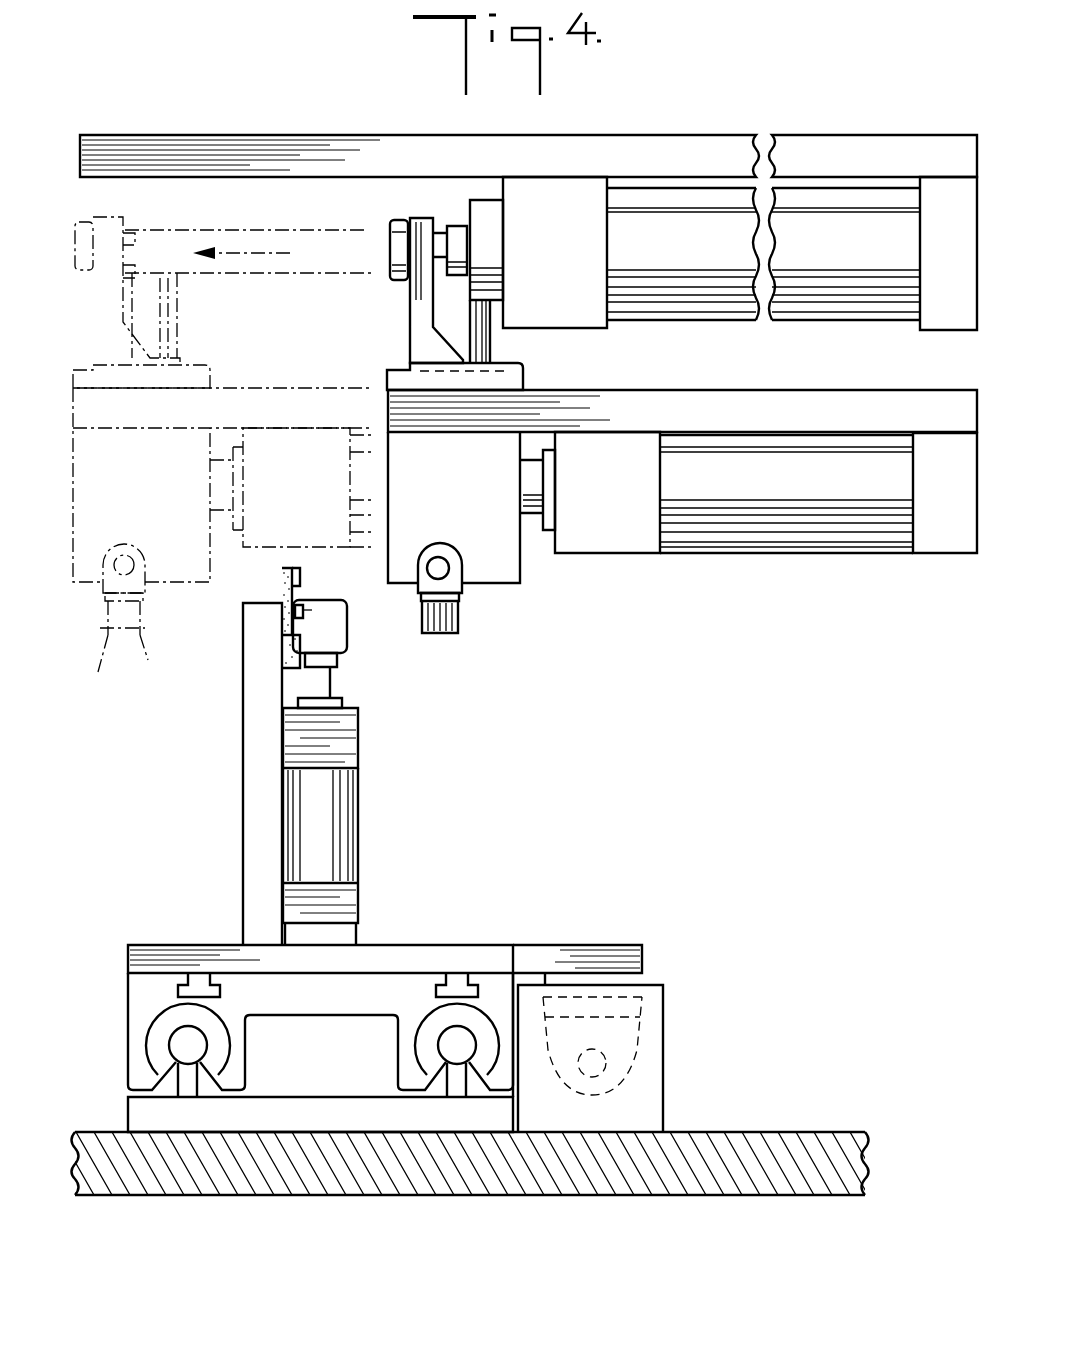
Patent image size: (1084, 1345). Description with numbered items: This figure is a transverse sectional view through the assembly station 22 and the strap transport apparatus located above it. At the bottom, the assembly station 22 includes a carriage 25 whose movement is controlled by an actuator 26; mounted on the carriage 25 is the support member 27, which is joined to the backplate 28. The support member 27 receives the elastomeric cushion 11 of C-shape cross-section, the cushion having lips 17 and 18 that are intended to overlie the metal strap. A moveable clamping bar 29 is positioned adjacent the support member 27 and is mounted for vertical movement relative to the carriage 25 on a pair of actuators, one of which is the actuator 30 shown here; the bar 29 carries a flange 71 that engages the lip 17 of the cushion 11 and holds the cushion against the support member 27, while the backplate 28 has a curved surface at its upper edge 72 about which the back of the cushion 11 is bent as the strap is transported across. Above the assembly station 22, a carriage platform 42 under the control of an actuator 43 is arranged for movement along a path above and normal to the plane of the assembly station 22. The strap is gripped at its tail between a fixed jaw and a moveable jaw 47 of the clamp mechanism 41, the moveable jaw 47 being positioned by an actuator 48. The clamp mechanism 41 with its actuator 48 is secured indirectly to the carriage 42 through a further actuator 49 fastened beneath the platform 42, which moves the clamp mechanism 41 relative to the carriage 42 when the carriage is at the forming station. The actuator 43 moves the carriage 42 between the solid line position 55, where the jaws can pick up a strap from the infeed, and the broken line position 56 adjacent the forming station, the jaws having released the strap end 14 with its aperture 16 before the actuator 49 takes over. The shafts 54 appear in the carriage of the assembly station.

The elastomeric cushion 11 is at (134, 640).
The strap end 14 is at (452, 556).
The aperture 16 is at (449, 572).
The cushion lip 17 is at (305, 607).
The cushion lip 18 is at (297, 578).
The assembly station 22 is at (363, 750).
The carriage 25 is at (485, 945).
The actuator 26 is at (655, 1052).
The support member 27 is at (290, 648).
The backplate 28 is at (258, 712).
The moveable clamping bar 29 is at (338, 600).
The actuator 30 is at (333, 851).
The clamp mechanism 41 is at (477, 607).
The carriage platform 42 is at (330, 362).
The actuator 43 is at (718, 295).
The moveable jaw 47 is at (447, 630).
The actuator 48 is at (140, 313).
The actuator 49 is at (737, 520).
The bearing shaft 54 is at (198, 1045).
The solid line position 55 is at (682, 623).
The broken line position 56 is at (120, 671).
The flange 71 is at (323, 627).
The upper edge 72 is at (280, 605).